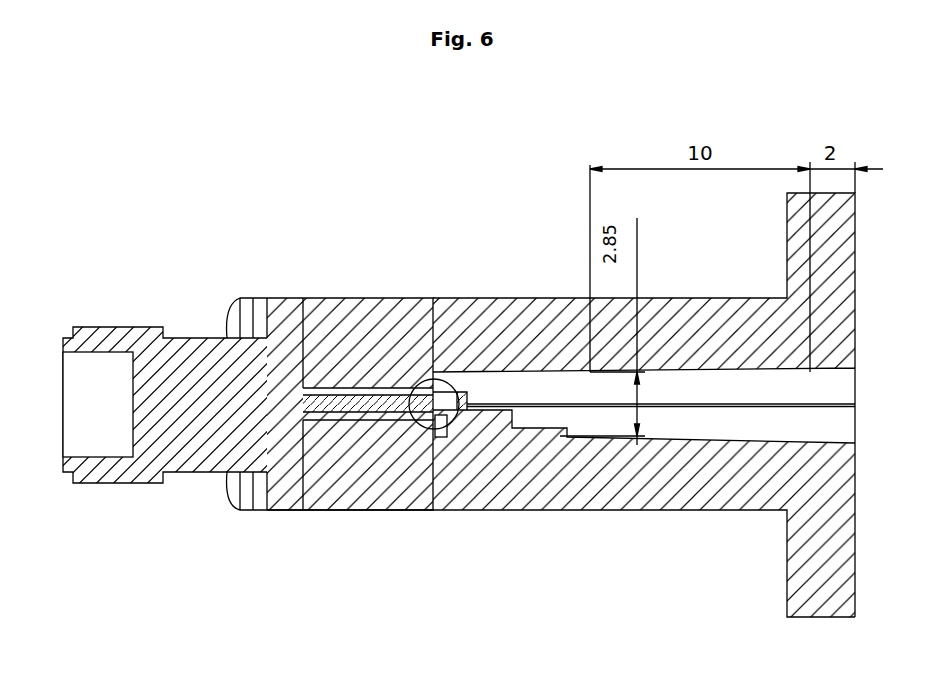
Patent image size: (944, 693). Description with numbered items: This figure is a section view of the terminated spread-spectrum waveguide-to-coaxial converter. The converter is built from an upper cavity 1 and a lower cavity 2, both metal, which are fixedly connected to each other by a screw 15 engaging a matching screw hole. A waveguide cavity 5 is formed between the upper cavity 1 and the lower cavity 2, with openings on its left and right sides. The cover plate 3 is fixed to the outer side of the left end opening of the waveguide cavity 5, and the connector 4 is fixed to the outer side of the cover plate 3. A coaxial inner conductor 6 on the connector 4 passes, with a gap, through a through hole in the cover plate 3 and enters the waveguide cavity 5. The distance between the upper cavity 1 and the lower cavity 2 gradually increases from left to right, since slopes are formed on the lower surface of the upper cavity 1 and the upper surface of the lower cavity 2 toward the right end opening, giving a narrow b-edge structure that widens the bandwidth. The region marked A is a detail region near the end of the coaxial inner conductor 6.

The upper cavity 1 is at (505, 298).
The lower cavity 2 is at (597, 510).
The cover plate 3 is at (365, 298).
The connector 4 is at (128, 327).
The waveguide cavity 5 is at (768, 388).
The coaxial inner conductor 6 is at (382, 405).
The screw 15 is at (235, 305).
The detail region A is at (416, 421).